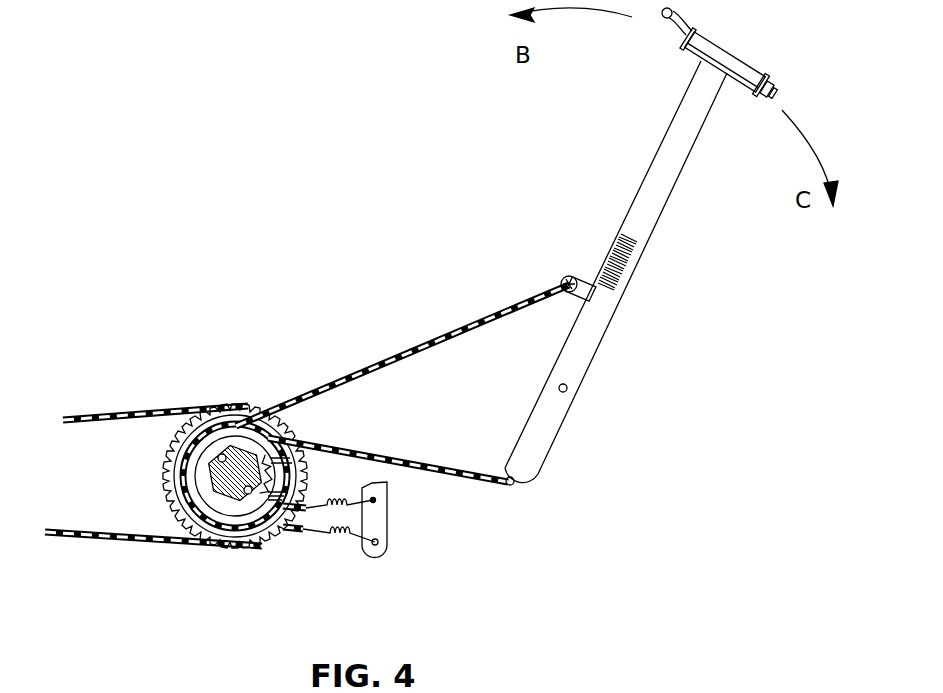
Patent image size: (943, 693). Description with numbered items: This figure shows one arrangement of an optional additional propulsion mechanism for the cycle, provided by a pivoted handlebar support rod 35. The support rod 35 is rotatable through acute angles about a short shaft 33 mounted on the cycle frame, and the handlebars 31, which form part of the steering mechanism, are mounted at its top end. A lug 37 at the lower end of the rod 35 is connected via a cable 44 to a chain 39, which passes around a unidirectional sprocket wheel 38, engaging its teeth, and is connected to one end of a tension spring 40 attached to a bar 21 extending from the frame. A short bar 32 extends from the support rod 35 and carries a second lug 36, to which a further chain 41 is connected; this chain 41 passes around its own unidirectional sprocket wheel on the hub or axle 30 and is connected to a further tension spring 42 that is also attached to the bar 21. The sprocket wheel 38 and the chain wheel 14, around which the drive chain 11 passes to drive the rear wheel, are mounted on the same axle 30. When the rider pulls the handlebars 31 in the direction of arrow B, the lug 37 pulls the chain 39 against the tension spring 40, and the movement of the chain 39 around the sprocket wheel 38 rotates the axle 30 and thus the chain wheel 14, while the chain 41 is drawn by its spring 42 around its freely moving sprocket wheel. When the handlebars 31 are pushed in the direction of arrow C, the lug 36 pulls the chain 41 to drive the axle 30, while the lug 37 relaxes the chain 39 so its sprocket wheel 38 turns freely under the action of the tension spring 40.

The chain 11 is at (141, 412).
The chain wheel 14 is at (224, 422).
The bar 21 is at (388, 516).
The axle 30 is at (226, 496).
The handlebars 31 is at (667, 19).
The short bar 32 is at (591, 282).
The shaft 33 is at (580, 372).
The handlebar support rod 35 is at (665, 196).
The second lug 36 is at (563, 281).
The lug 37 is at (540, 472).
The sprocket wheel 38 is at (238, 484).
The chain 39 is at (305, 436).
The tension spring 40 is at (336, 540).
The further chain 41 is at (300, 397).
The further tension spring 42 is at (350, 500).
The cable 44 is at (391, 486).